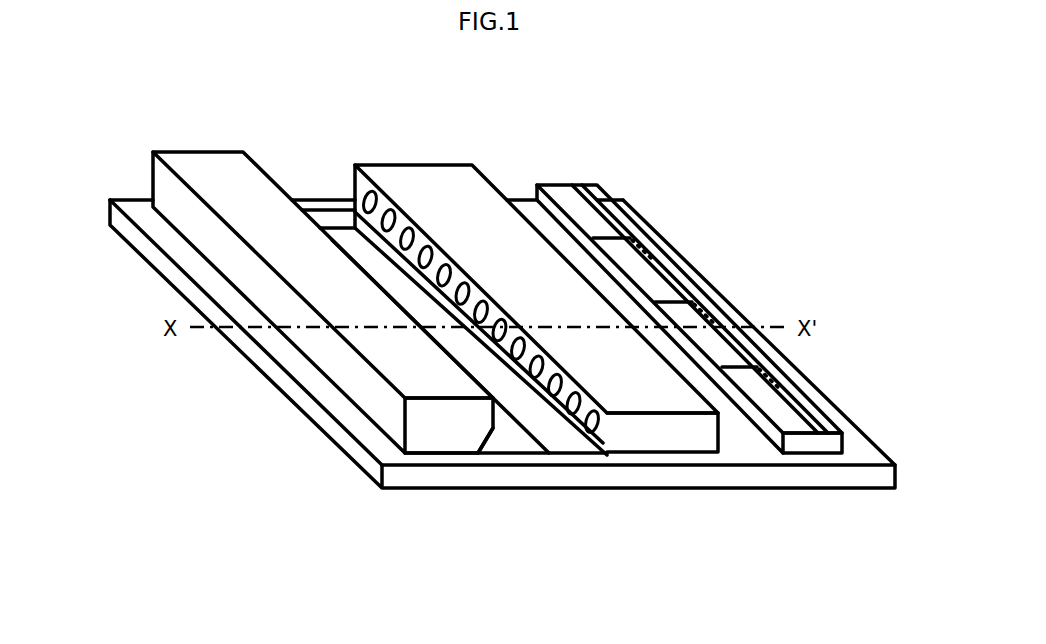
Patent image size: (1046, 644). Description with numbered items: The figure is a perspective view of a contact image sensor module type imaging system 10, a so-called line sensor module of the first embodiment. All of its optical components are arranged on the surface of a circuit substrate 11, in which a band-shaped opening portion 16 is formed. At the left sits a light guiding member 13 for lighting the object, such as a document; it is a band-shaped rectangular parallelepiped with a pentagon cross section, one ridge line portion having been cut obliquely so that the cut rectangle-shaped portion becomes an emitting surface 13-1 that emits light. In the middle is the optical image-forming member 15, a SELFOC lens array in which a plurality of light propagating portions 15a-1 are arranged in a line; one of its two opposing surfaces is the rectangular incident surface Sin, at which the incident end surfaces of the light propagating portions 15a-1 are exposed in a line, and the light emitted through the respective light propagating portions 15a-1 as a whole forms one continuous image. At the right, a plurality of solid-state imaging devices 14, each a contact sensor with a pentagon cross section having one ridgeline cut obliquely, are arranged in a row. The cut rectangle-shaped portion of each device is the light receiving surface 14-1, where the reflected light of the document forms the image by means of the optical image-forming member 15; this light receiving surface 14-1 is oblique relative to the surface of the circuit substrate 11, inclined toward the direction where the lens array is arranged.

The imaging system 10 is at (571, 138).
The circuit substrate 11 is at (853, 477).
The light guiding member 13 is at (432, 432).
The emitting surface 13-1 is at (490, 437).
The solid-state imaging device 14 is at (632, 242).
The light receiving surface 14-1 is at (570, 213).
The optical image-forming member 15 is at (668, 435).
The light propagating portion 15a-1 is at (428, 235).
The opening portion 16 is at (541, 438).
The incident surface Sin is at (597, 447).